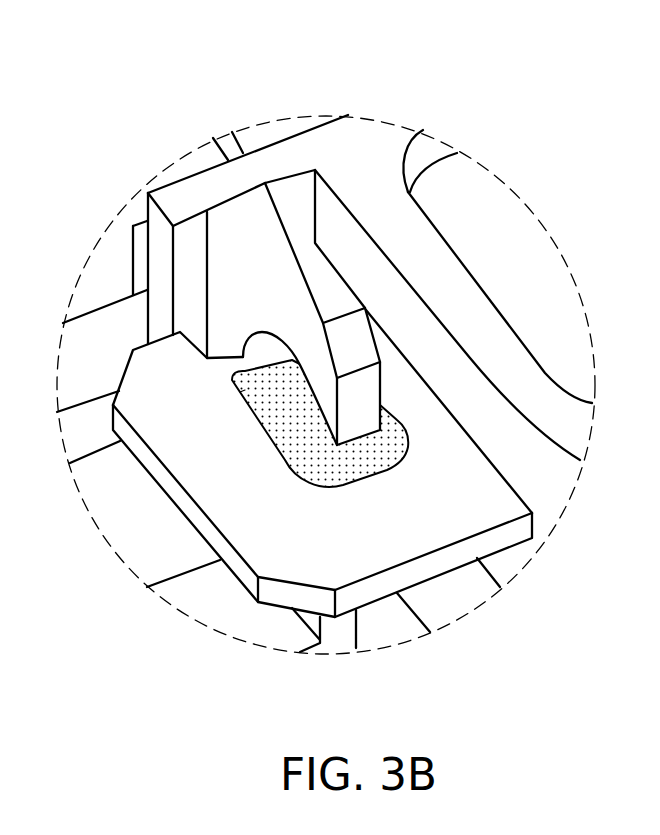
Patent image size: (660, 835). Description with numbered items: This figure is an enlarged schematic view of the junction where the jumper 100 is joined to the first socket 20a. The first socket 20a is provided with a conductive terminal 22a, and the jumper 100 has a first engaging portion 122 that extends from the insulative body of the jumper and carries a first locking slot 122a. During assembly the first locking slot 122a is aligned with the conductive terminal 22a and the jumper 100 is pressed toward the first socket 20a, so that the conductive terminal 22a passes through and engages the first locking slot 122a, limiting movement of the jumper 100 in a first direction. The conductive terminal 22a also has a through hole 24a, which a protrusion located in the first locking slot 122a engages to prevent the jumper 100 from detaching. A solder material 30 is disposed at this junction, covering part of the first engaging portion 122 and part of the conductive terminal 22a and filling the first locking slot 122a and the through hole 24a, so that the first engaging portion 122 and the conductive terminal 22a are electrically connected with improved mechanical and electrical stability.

The jumper 100 is at (468, 222).
The first socket 20a is at (430, 595).
The conductive terminal 22a is at (357, 340).
The through hole 24a is at (261, 338).
The solder material 30 is at (242, 392).
The first engaging portion 122 is at (443, 492).
The first locking slot 122a is at (320, 476).